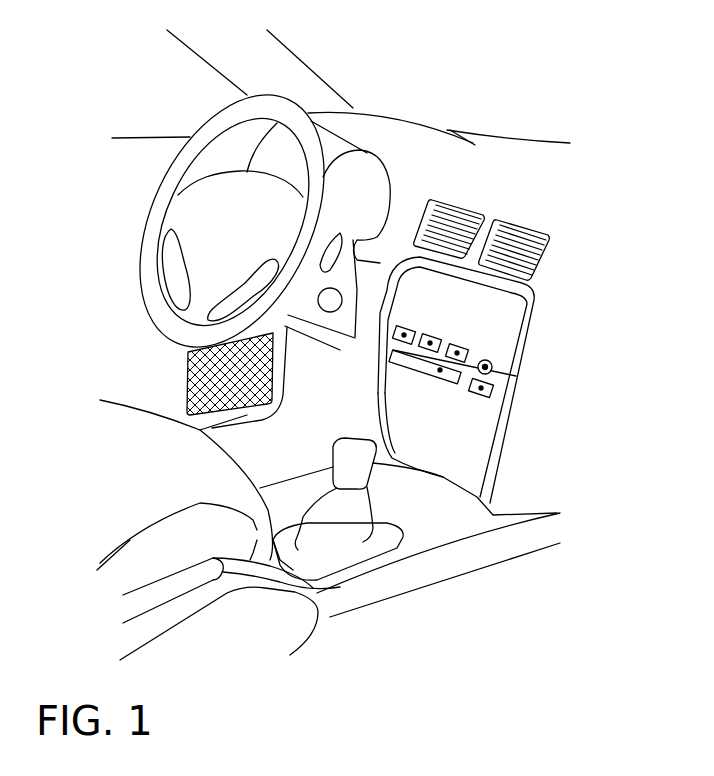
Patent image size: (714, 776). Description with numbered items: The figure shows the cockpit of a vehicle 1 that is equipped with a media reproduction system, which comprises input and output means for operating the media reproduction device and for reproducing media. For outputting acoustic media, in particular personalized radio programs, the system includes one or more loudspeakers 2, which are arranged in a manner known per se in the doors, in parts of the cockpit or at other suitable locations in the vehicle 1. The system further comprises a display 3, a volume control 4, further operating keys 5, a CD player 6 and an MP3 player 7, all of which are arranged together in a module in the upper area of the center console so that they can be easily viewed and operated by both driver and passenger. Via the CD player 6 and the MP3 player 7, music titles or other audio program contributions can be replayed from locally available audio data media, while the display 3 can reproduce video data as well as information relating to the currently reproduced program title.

The vehicle 1 is at (483, 92).
The loudspeakers 2 is at (232, 397).
The display 3 is at (456, 380).
The volume control 4 is at (490, 373).
The operating keys 5 is at (447, 360).
The CD player 6 is at (437, 372).
The MP3 player 7 is at (480, 394).